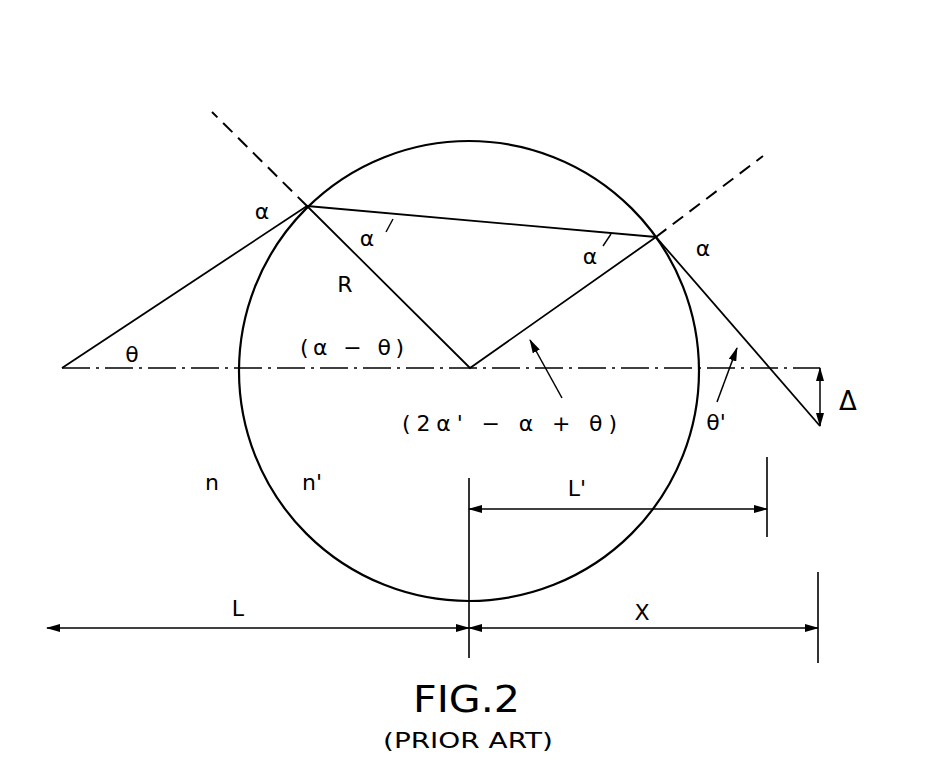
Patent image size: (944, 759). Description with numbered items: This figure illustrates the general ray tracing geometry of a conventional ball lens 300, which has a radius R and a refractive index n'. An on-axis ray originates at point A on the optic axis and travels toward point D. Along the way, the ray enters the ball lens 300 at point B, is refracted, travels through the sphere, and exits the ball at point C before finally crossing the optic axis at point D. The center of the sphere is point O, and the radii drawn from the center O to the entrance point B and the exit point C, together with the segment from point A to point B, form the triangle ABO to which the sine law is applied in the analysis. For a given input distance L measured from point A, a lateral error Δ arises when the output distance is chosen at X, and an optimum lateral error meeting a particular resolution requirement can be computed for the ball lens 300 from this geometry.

The ball lens 300 is at (546, 150).
The origin point of on-axis ray A is at (180, 287).
The ray entrance point B is at (263, 159).
The ray exit point C is at (706, 196).
The axis crossing point D is at (738, 331).
The center of ball lens O is at (481, 287).